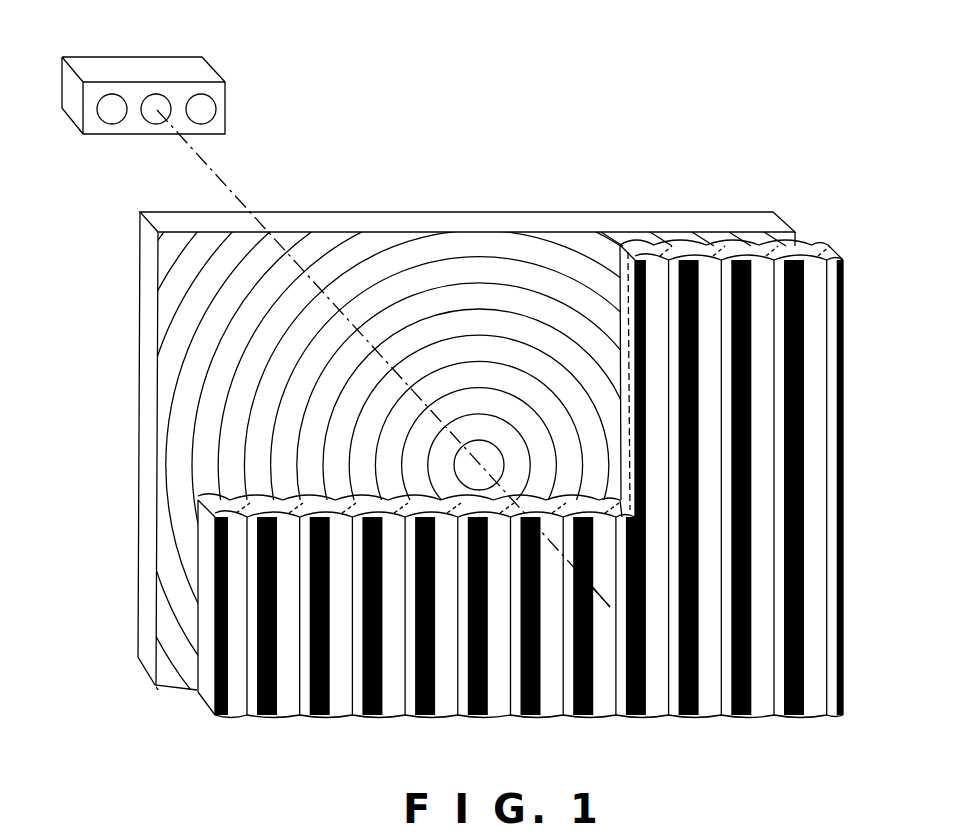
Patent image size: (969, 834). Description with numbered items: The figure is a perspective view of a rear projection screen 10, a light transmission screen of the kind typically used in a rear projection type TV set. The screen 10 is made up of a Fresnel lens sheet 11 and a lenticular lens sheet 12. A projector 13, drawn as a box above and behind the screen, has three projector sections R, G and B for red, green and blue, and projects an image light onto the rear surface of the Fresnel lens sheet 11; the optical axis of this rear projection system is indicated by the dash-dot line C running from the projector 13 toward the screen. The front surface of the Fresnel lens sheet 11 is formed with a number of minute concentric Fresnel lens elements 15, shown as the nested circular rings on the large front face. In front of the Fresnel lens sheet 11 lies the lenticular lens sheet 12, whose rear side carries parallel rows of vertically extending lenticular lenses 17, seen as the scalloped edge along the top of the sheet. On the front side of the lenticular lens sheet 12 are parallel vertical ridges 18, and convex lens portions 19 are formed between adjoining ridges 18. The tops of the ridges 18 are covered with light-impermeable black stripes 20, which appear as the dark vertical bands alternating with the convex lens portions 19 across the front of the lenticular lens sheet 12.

The rear projection screen 10 is at (494, 453).
The Fresnel lens sheet 11 is at (722, 212).
The lenticular lens sheet 12 is at (749, 437).
The projector 13 is at (140, 62).
The Fresnel lens elements 15 is at (485, 250).
The lenticular lenses 17 is at (680, 250).
The vertical ridges 18 is at (305, 705).
The convex lens portions 19 is at (812, 383).
The black stripes 20 is at (838, 530).
The red projector section R is at (112, 117).
The green projector section G is at (157, 117).
The blue projector section B is at (207, 113).
The optical axis C is at (227, 182).